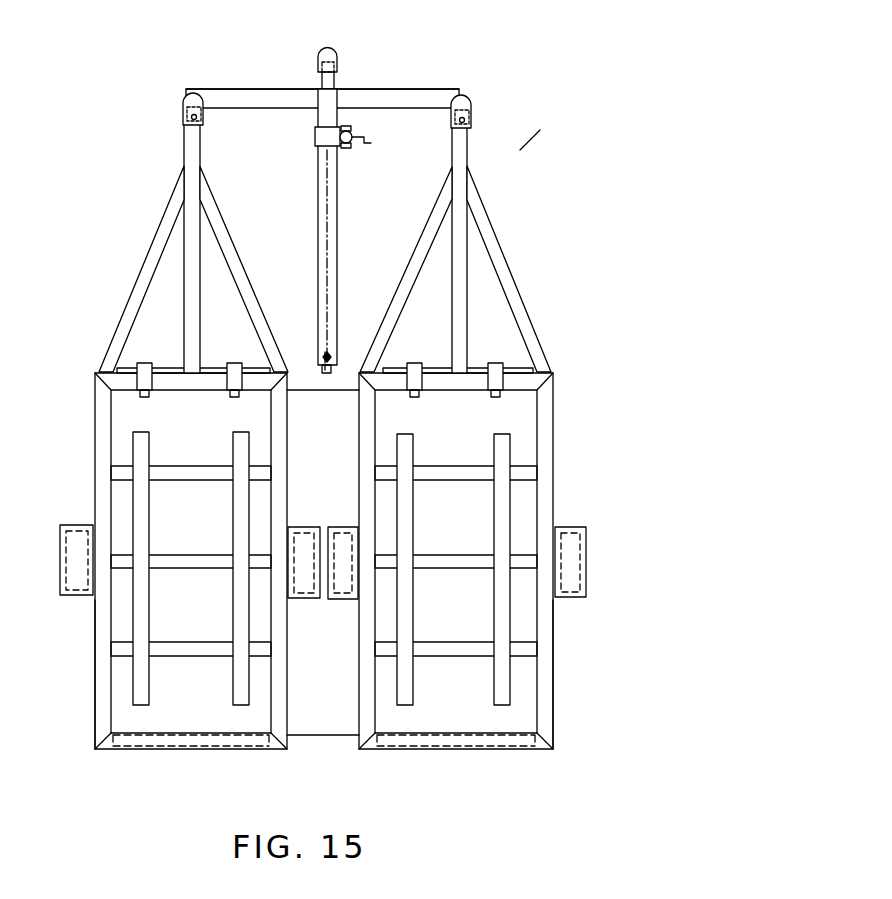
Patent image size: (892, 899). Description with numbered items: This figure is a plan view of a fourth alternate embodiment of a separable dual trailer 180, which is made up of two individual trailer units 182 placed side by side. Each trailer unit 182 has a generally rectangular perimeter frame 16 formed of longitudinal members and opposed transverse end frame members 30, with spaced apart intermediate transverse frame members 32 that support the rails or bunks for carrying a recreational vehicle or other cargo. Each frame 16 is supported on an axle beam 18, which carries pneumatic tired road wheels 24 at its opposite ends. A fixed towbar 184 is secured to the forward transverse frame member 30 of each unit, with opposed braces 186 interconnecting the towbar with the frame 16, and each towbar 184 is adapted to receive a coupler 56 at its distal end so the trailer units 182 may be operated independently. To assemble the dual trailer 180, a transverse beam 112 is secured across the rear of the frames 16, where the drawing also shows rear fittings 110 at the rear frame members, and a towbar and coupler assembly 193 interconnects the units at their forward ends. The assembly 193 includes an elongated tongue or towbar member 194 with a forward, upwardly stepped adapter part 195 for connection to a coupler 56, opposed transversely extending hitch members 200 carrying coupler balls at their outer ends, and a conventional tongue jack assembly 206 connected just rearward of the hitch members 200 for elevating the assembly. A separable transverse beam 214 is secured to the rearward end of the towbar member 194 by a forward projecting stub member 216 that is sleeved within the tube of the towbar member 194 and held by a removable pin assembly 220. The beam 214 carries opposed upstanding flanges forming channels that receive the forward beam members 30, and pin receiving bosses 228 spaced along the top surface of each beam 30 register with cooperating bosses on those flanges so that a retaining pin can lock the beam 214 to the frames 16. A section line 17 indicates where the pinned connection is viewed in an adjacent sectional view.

The perimeter frame 16 is at (93, 687).
The section line 17 is at (340, 157).
The axle beam 18 is at (236, 362).
The road wheels 24 is at (60, 596).
The transverse end frame members 30 is at (190, 385).
The intermediate transverse frame members 32 is at (180, 480).
The coupler 56 is at (183, 112).
The bottom channel 110 is at (129, 749).
The transverse beam 112 is at (303, 752).
The dual trailer 180 is at (518, 151).
The trailer units 182 is at (95, 414).
The towbar 184 is at (183, 240).
The braces 186 is at (128, 300).
The towbar and coupler assembly 193 is at (292, 88).
The towbar member 194 is at (316, 148).
The adapter part 195 is at (337, 84).
The hitch members 200 is at (243, 88).
The tongue jack assembly 206 is at (350, 148).
The transverse beam 214 is at (314, 362).
The stub member 216 is at (333, 380).
The removable pin assembly 220 is at (330, 357).
The pin receiving bosses 228 is at (140, 362).